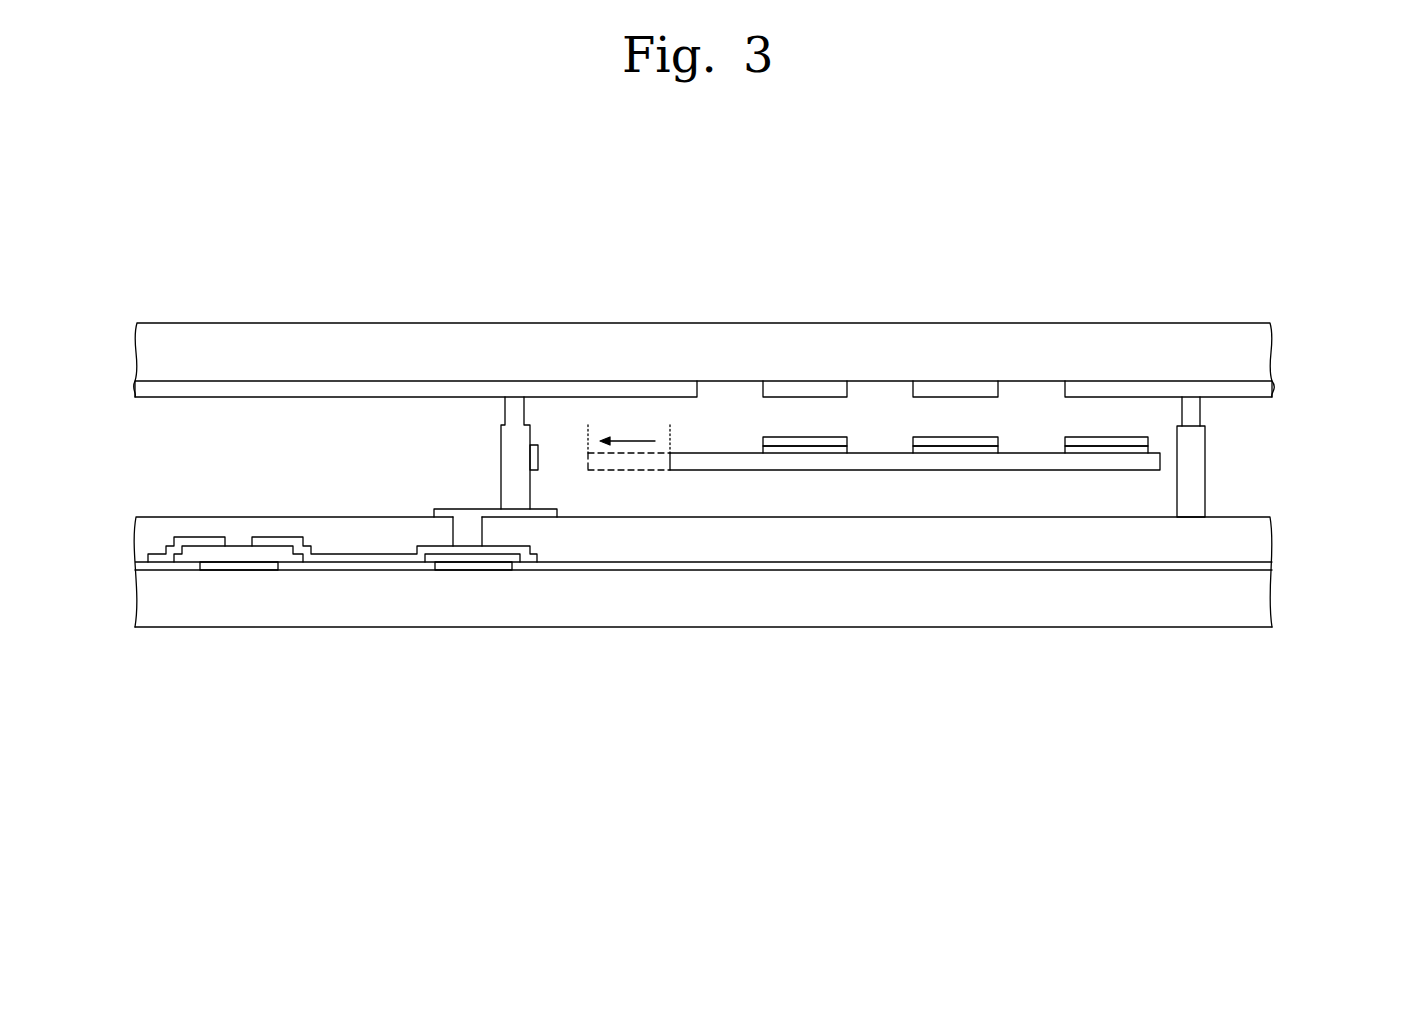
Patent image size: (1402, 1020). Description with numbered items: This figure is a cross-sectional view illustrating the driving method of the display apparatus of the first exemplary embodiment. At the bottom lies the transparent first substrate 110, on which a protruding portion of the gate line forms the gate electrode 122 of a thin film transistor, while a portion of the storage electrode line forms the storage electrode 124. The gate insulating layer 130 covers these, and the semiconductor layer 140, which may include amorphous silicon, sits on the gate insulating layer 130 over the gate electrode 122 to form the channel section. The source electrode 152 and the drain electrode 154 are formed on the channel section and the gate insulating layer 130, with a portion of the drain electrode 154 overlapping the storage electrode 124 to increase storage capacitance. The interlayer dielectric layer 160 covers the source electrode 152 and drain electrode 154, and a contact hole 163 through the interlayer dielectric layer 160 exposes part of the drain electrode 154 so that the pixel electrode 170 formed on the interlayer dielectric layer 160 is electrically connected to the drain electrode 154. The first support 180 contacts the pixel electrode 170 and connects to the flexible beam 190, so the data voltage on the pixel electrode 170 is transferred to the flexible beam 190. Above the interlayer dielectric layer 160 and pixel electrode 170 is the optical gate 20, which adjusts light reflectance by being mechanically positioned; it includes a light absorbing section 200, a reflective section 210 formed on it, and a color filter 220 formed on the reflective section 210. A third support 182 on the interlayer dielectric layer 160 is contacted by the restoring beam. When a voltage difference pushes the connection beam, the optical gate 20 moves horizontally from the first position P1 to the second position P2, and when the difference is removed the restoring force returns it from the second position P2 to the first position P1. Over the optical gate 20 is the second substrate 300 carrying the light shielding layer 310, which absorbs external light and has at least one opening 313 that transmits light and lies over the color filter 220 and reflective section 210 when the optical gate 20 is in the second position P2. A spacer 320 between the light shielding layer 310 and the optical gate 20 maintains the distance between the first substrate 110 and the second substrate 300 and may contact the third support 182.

The optical gate 20 is at (1039, 446).
The first substrate 110 is at (1266, 601).
The gate electrode 122 is at (226, 566).
The storage electrode 124 is at (455, 566).
The gate insulating layer 130 is at (1266, 566).
The semiconductor layer 140 is at (295, 556).
The source electrode 152 is at (160, 556).
The drain electrode 154 is at (368, 556).
The interlayer dielectric layer 160 is at (1266, 539).
The contact hole 163 is at (482, 531).
The pixel electrode 170 is at (547, 514).
The first support 180 is at (510, 485).
The third support 182 is at (1196, 469).
The flexible beam 190 is at (530, 456).
The light absorbing section 200 is at (722, 462).
The reflective section 210 is at (788, 449).
The color filter 220 is at (818, 440).
The second substrate 300 is at (1266, 349).
The light shielding layer 310 is at (1268, 391).
The opening 313 is at (884, 394).
The spacer 320 is at (1196, 409).
The first position P1 is at (670, 468).
The second position P2 is at (587, 468).